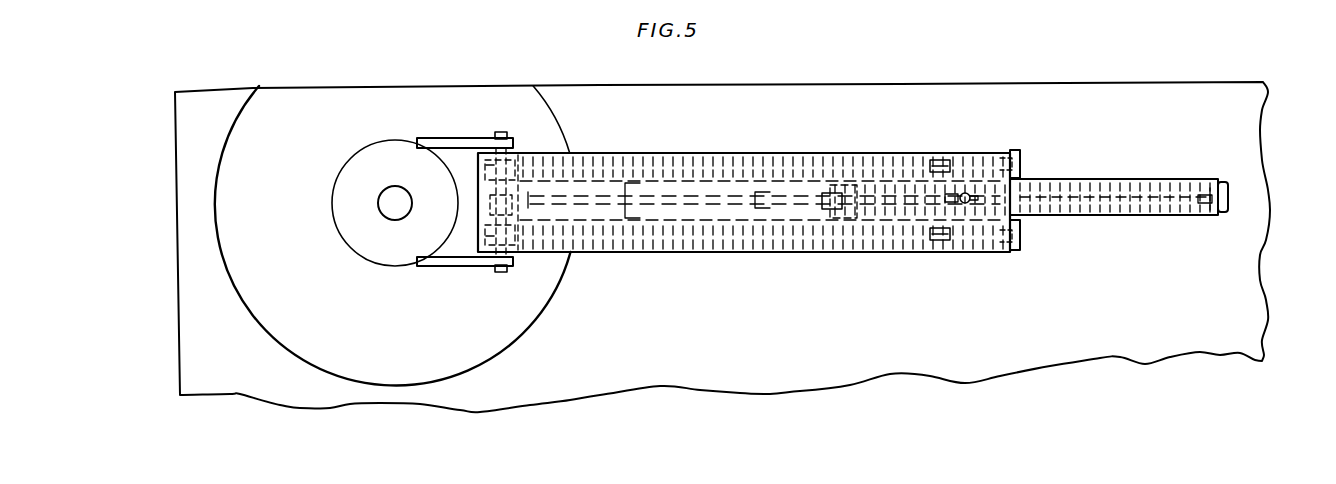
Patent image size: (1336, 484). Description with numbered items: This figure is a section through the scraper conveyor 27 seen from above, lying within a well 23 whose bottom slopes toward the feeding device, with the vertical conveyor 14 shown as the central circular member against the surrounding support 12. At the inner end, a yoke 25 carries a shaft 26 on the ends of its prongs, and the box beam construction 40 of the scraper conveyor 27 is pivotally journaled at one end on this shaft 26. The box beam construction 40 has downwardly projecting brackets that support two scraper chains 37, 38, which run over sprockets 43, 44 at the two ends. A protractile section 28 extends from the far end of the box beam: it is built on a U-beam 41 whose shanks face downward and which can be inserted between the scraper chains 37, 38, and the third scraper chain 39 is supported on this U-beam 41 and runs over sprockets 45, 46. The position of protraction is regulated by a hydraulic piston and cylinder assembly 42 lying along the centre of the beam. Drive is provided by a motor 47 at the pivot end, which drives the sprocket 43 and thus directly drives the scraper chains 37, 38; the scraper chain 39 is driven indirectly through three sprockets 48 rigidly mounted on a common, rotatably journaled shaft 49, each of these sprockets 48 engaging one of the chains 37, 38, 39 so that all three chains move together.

The support plate 12 is at (190, 112).
The vertical conveyor 14 is at (388, 196).
The well 23 is at (517, 313).
The yoke 25 is at (438, 142).
The shaft 26 is at (498, 135).
The scraper conveyor 27 is at (733, 155).
The protractile section 28 is at (1095, 178).
The scraper chain 37 is at (656, 158).
The scraper chain 38 is at (658, 248).
The scraper chain 39 is at (1130, 212).
The box beam construction 40 is at (814, 155).
The U-beam 41 is at (1158, 182).
The hydraulic piston and cylinder assembly 42 is at (590, 195).
The sprocket 43 is at (520, 164).
The sprocket 44 is at (1021, 165).
The sprocket 45 is at (855, 238).
The sprocket 46 is at (1212, 186).
The motor 47 is at (482, 199).
The sprockets 48 is at (940, 160).
The shaft 49 is at (975, 162).